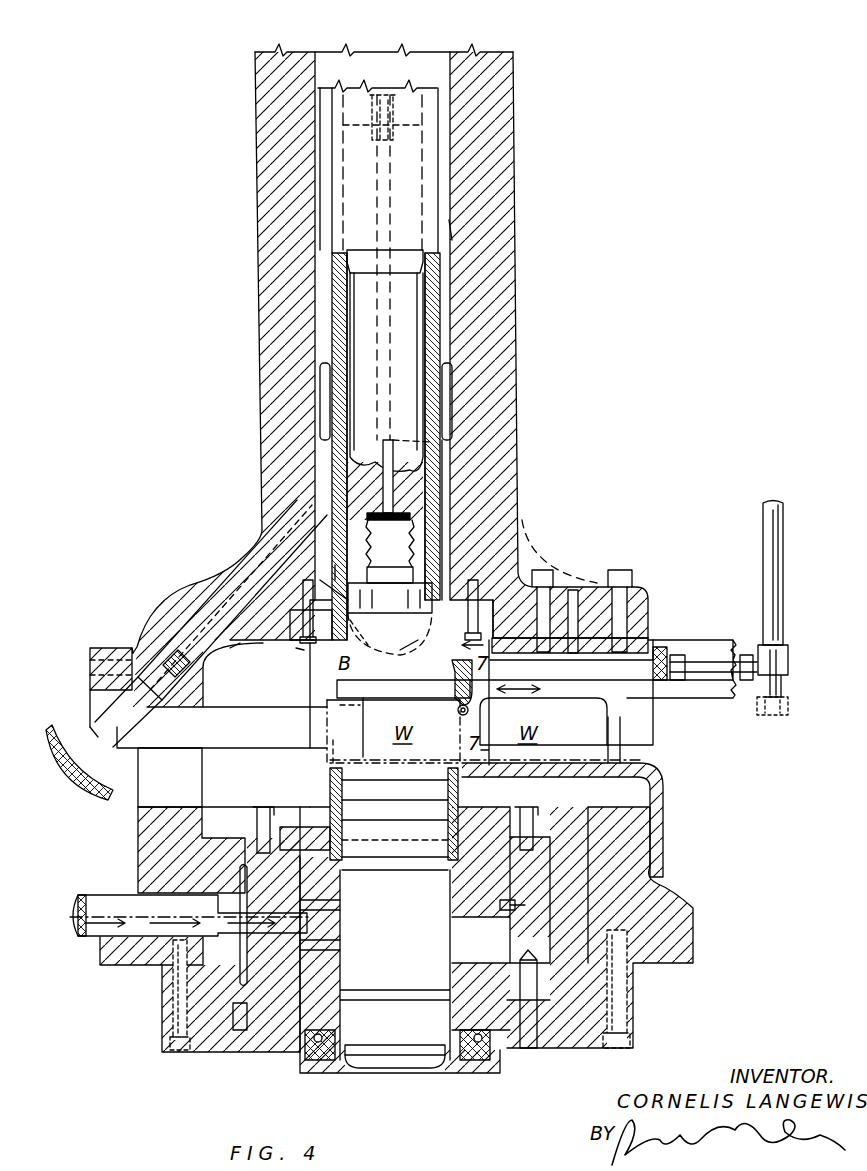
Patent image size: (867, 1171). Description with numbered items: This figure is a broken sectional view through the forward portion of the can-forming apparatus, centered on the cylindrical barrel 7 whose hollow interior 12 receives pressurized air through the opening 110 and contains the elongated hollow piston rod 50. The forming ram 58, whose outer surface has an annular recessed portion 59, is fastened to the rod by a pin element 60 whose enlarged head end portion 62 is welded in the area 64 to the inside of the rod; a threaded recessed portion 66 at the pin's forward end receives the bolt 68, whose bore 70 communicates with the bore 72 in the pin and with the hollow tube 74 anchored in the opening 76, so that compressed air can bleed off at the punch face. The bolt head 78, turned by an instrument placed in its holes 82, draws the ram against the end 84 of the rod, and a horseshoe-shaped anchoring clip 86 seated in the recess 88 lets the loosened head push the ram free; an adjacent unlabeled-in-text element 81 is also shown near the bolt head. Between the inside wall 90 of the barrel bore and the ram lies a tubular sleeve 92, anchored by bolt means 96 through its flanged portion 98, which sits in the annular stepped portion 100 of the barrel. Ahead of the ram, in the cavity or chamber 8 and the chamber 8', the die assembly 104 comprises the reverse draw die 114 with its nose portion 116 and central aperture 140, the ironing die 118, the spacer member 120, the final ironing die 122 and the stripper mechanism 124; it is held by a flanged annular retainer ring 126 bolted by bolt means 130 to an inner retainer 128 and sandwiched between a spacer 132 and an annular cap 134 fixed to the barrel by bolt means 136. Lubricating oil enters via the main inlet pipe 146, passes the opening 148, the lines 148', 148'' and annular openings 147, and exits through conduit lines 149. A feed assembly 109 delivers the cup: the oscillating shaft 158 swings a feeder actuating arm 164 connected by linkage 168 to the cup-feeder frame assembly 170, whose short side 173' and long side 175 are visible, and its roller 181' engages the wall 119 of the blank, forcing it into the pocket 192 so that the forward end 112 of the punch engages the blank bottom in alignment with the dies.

The cylindrical barrel 7 is at (530, 465).
The cavity or chamber 8 is at (186, 650).
The chamber 8' is at (183, 777).
The hollow interior 12 is at (420, 60).
The hollow piston rod 50 is at (432, 190).
The forming ram 58 is at (340, 575).
The annular recessed portion 59 is at (325, 398).
The pin element 60 is at (422, 328).
The enlarged head end portion 62 is at (412, 216).
The weld area 64 is at (428, 256).
The threaded recessed portion 66 is at (418, 545).
The bolt 68 is at (403, 609).
The bore 70 is at (425, 518).
The bore 72 is at (432, 445).
The hollow tube 74 is at (395, 102).
The opening 76 is at (420, 125).
The bolt head 78 is at (330, 590).
The head 81 is at (418, 572).
The holes 82 is at (396, 650).
The end of hollow piston rod 84 is at (335, 276).
The anchoring clip 86 is at (418, 655).
The recess 88 is at (292, 620).
The inside wall 90 is at (448, 232).
The tubular sleeve 92 is at (443, 490).
The bolt means 96 is at (300, 592).
The flanged portion 98 is at (296, 652).
The annular stepped portion 100 is at (270, 650).
The die assembly 104 is at (434, 1082).
The feed assembly 109 is at (669, 625).
The opening 110 is at (320, 146).
The forward end of punch 112 is at (312, 680).
The reverse draw die 114 is at (323, 808).
The nose portion 116 is at (465, 795).
The ironing die 118 is at (520, 870).
The wall of workpiece 119 is at (335, 719).
The spacer member 120 is at (565, 876).
The final ironing die 122 is at (416, 990).
The stripper mechanism 124 is at (512, 1062).
The flanged annular retainer ring 126 is at (540, 893).
The inner retainer 128 is at (420, 800).
The bolt means 130 is at (260, 807).
The spacer 132 is at (180, 985).
The annular cap 134 is at (600, 1045).
The bolt means 136 is at (175, 1010).
The central aperture 140 is at (330, 778).
The main inlet pipe 146 is at (46, 900).
The annular openings 147 is at (240, 910).
The opening 148 is at (241, 1063).
The line 148' is at (348, 903).
The line 148'' is at (351, 943).
The conduit lines 149 is at (410, 1045).
The oscillating shaft 158 is at (763, 523).
The feeder actuating arm 164 is at (773, 715).
The linkage 168 is at (711, 633).
The cup-feeder frame assembly 170 is at (650, 683).
The short side 173' is at (398, 716).
The long side 175 is at (570, 673).
The roller 181' is at (441, 691).
The pocket 192 is at (212, 707).